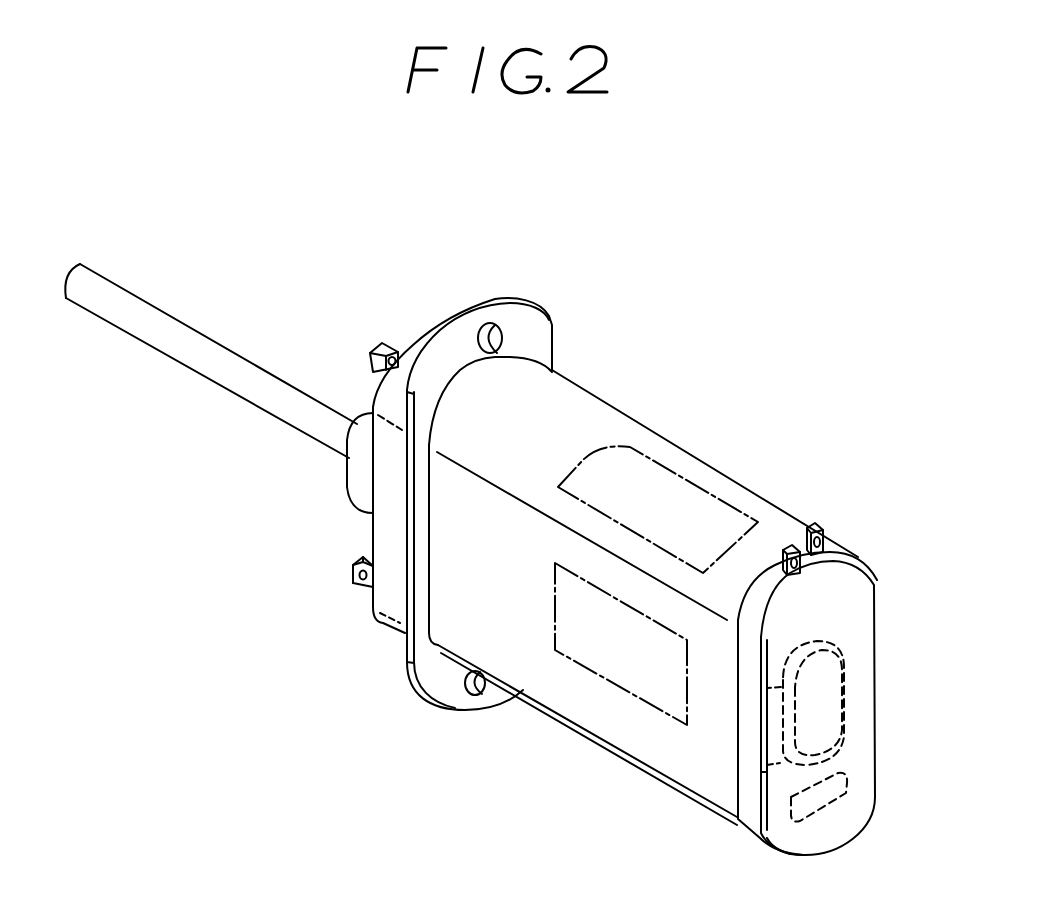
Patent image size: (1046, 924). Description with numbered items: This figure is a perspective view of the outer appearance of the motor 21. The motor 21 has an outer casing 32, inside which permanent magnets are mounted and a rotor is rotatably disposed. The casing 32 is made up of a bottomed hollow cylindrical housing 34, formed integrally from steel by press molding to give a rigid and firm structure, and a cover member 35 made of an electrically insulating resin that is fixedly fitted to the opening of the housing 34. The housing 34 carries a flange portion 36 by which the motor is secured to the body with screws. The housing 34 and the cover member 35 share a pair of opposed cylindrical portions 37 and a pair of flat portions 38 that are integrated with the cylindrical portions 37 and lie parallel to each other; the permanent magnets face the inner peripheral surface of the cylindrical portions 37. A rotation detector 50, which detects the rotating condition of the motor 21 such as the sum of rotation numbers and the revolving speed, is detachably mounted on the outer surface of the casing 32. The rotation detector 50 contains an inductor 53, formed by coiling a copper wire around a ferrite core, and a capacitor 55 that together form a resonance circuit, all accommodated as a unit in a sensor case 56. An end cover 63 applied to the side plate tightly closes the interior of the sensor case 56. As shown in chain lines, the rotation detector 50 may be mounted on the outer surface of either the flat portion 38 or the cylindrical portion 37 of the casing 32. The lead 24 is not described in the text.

The motor 21 is at (745, 362).
The cable 24 is at (290, 384).
The outer casing 32 is at (710, 467).
The housing 34 is at (647, 430).
The cover member 35 is at (398, 630).
The flange portion 36 is at (485, 298).
The cylindrical portions 37 is at (570, 410).
The flat portions 38 is at (513, 598).
The rotation detector 50 is at (738, 493).
The inductor 53 is at (760, 803).
The capacitor 55 is at (842, 808).
The sensor case 56 is at (877, 672).
The end cover 63 is at (864, 738).